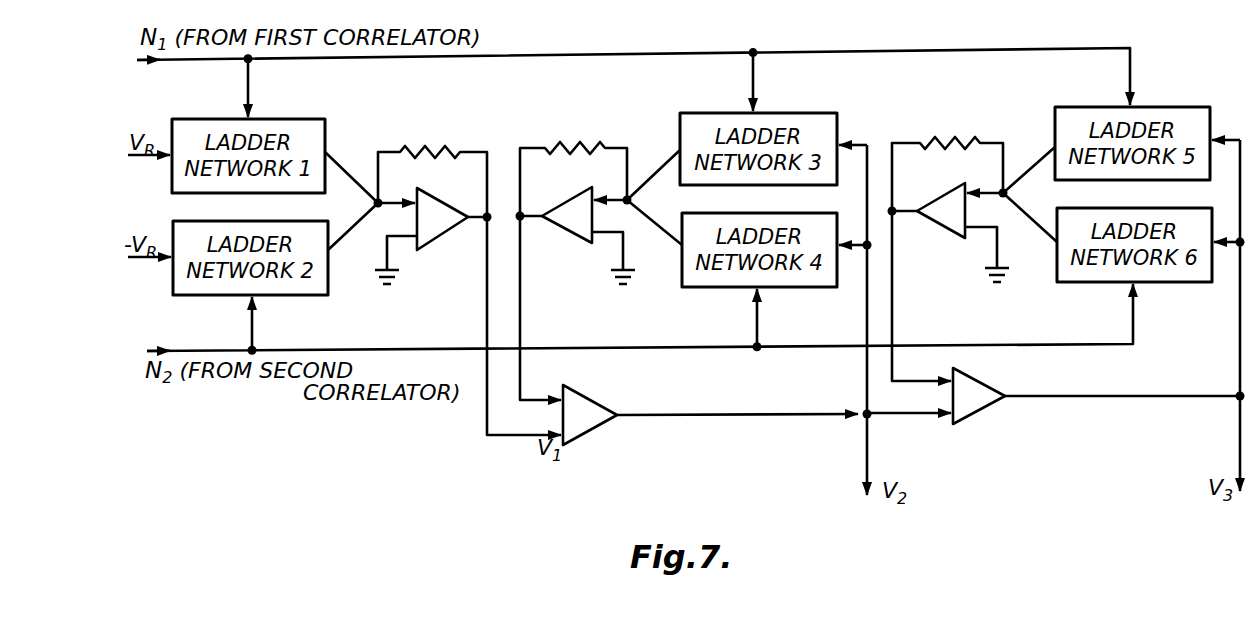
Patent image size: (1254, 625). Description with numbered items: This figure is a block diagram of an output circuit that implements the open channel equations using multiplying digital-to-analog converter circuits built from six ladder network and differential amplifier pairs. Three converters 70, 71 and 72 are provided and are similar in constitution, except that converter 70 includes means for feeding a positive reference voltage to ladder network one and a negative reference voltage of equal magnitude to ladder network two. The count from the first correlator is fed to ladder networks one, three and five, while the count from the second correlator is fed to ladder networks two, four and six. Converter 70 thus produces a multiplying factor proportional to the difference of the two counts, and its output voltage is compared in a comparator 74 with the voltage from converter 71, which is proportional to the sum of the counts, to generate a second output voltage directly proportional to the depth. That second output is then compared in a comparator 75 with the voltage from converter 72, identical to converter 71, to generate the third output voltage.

The converter 70 is at (373, 136).
The converter 71 is at (640, 136).
The converter 72 is at (990, 130).
The comparator 74 is at (600, 430).
The comparator 75 is at (985, 410).